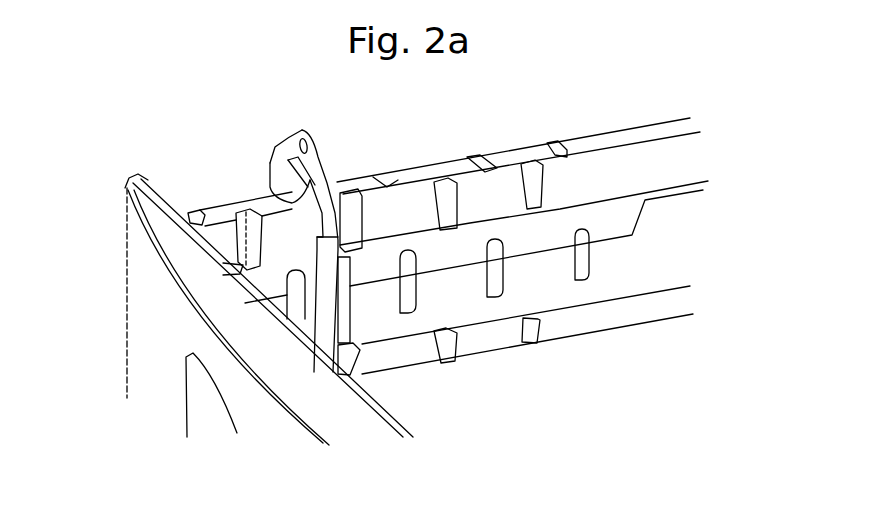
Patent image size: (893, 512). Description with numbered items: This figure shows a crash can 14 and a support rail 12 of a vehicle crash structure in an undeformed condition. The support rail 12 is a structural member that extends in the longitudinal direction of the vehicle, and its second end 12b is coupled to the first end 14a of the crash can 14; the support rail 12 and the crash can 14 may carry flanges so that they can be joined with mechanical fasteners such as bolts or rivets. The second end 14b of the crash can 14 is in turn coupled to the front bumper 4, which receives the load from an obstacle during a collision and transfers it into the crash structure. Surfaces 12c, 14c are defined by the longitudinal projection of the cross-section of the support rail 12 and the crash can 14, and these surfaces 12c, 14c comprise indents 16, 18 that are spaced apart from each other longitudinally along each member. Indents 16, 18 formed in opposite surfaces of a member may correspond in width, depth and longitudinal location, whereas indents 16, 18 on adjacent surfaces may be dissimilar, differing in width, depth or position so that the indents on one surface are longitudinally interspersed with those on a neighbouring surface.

The front bumper 4 is at (127, 257).
The support rail 12 is at (535, 146).
The second end of the support rail 12b is at (334, 185).
The surface of the support rail 12c is at (657, 163).
The crash can 14 is at (233, 213).
The first end of the crash can 14a is at (313, 150).
The second end of the crash can 14b is at (148, 180).
The surface of the crash can 14c is at (217, 210).
The indent 16 is at (395, 182).
The indent 18 is at (195, 220).